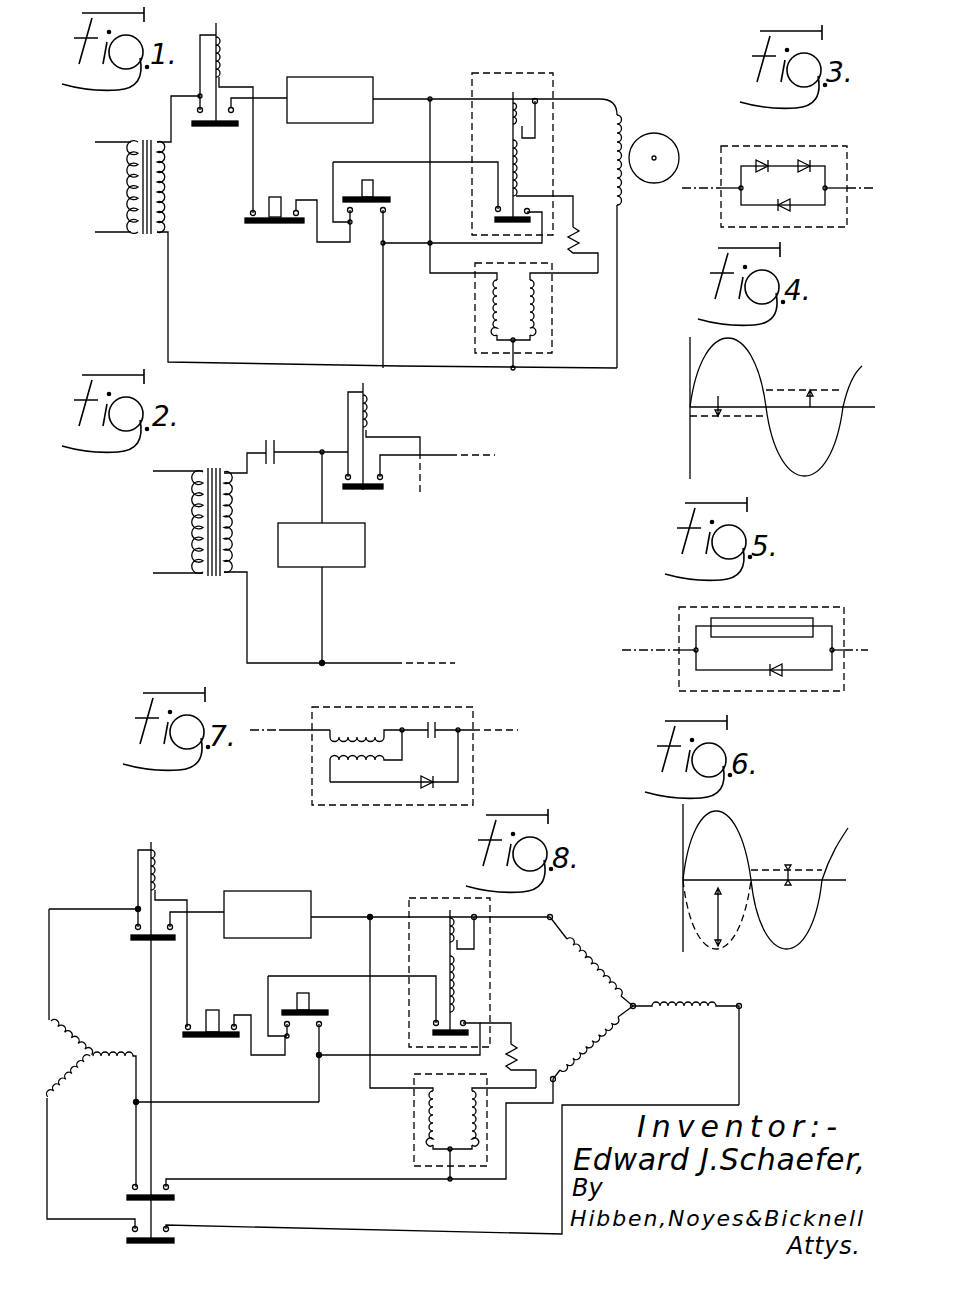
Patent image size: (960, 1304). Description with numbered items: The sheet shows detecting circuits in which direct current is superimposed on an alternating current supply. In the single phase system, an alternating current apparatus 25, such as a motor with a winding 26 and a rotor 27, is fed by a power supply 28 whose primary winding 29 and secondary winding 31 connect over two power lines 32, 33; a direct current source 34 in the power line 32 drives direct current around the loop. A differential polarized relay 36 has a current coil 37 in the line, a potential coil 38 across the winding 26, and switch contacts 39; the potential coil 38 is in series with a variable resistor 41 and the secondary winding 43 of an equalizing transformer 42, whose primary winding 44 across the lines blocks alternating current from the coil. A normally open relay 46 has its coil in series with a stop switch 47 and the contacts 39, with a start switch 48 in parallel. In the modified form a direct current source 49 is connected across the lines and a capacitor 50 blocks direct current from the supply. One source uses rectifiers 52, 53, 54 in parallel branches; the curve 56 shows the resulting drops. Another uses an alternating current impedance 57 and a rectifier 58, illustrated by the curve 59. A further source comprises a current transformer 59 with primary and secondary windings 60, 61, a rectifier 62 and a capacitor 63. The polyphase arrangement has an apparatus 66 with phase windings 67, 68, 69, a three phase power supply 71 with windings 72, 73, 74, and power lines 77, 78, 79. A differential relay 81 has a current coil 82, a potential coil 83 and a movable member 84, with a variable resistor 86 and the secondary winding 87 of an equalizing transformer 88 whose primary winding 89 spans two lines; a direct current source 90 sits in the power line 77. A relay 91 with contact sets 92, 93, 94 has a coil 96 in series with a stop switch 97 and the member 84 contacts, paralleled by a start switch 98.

In FIG. 1, the alternating current apparatus 25 is at (636, 112).
In FIG. 1, the motor winding 26 is at (612, 190).
In FIG. 1, the rotor 27 is at (656, 182).
In FIG. 1, the alternating current power supply 28 is at (138, 237).
In FIG. 2, the alternating current power supply 28 is at (203, 575).
In FIG. 1, the primary winding 29 is at (124, 140).
In FIG. 2, the primary winding 29 is at (204, 460).
In FIG. 1, the secondary winding 31 is at (160, 138).
In FIG. 1, the power line 32 is at (396, 96).
In FIG. 2, the power line 32 is at (452, 452).
In FIG. 3, the power line 32 is at (704, 196).
In FIG. 5, the power line 32 is at (656, 650).
In FIG. 7, the power line 32 is at (292, 732).
In FIG. 1, the power line 33 is at (288, 364).
In FIG. 2, the power line 33 is at (376, 660).
In FIG. 1, the direct current source 34 is at (314, 76).
In FIG. 1, the differential polarized relay 36 is at (530, 66).
In FIG. 1, the current coil 37 is at (510, 107).
In FIG. 1, the potential coil 38 is at (520, 164).
In FIG. 1, the switch contacts 39 is at (494, 219).
In FIG. 1, the variable resistor 41 is at (586, 241).
In FIG. 1, the equalizing transformer 42 is at (555, 352).
In FIG. 1, the secondary winding 43 is at (536, 312).
In FIG. 1, the primary winding 44 is at (492, 308).
In FIG. 1, the normally open relay 46 is at (225, 46).
In FIG. 2, the normally open relay 46 is at (374, 412).
In FIG. 1, the stop switch 47 is at (288, 226).
In FIG. 1, the start switch 48 is at (400, 173).
In FIG. 2, the direct current source 49 is at (366, 548).
In FIG. 2, the capacitor 50 is at (270, 438).
In FIG. 3, the rectifier 52 is at (790, 210).
In FIG. 3, the rectifier 53 is at (760, 160).
In FIG. 3, the rectifier 54 is at (810, 162).
In FIG. 4, the curve 56 is at (822, 465).
In FIG. 5, the alternating current impedance 57 is at (812, 618).
In FIG. 5, the rectifier 58 is at (776, 676).
In FIG. 6, the curve / current transformer 59 is at (810, 950).
In FIG. 7, the curve / current transformer 59 is at (348, 714).
In FIG. 7, the primary winding 60 is at (362, 736).
In FIG. 7, the secondary winding 61 is at (372, 762).
In FIG. 7, the rectifier 62 is at (426, 787).
In FIG. 7, the capacitor 63 is at (438, 720).
In FIG. 8, the apparatus 66 is at (690, 1000).
In FIG. 8, the phase winding 67 is at (596, 974).
In FIG. 8, the phase winding 68 is at (682, 1012).
In FIG. 8, the phase winding 69 is at (600, 1046).
In FIG. 8, the three phase power supply 71 is at (78, 1080).
In FIG. 8, the winding 72 is at (62, 1030).
In FIG. 8, the winding 73 is at (102, 1054).
In FIG. 8, the winding 74 is at (66, 1074).
In FIG. 8, the power line 77 is at (208, 908).
In FIG. 8, the power line 78 is at (238, 1177).
In FIG. 8, the power line 79 is at (285, 1224).
In FIG. 8, the differential relay 81 is at (406, 892).
In FIG. 8, the current coil 82 is at (447, 928).
In FIG. 8, the potential coil 83 is at (458, 992).
In FIG. 8, the movable member 84 is at (432, 1034).
In FIG. 8, the variable resistor 86 is at (522, 1052).
In FIG. 8, the secondary winding 87 is at (478, 1130).
In FIG. 8, the equalizing transformer 88 is at (468, 1168).
In FIG. 8, the primary winding 89 is at (430, 1130).
In FIG. 8, the direct current source 90 is at (314, 930).
In FIG. 8, the relay 91 is at (128, 870).
In FIG. 8, the set of contacts 92 is at (134, 942).
In FIG. 8, the set of contacts 93 is at (132, 1186).
In FIG. 8, the set of contacts 94 is at (132, 1236).
In FIG. 8, the coil 96 is at (160, 866).
In FIG. 8, the stop switch 97 is at (216, 1042).
In FIG. 8, the start switch 98 is at (326, 1008).